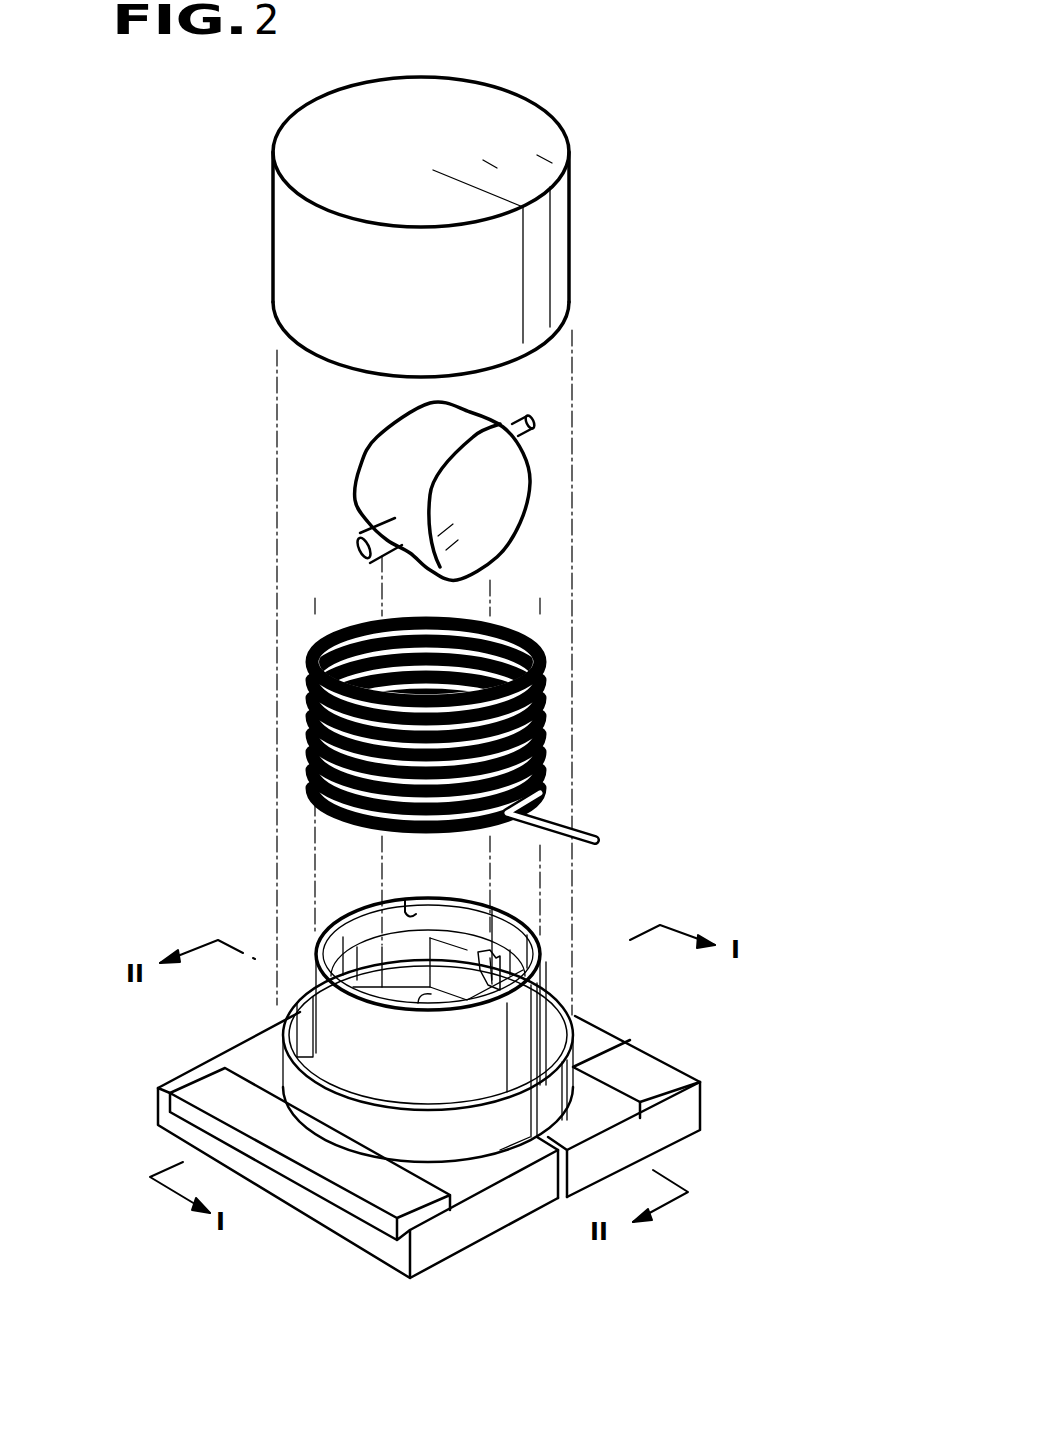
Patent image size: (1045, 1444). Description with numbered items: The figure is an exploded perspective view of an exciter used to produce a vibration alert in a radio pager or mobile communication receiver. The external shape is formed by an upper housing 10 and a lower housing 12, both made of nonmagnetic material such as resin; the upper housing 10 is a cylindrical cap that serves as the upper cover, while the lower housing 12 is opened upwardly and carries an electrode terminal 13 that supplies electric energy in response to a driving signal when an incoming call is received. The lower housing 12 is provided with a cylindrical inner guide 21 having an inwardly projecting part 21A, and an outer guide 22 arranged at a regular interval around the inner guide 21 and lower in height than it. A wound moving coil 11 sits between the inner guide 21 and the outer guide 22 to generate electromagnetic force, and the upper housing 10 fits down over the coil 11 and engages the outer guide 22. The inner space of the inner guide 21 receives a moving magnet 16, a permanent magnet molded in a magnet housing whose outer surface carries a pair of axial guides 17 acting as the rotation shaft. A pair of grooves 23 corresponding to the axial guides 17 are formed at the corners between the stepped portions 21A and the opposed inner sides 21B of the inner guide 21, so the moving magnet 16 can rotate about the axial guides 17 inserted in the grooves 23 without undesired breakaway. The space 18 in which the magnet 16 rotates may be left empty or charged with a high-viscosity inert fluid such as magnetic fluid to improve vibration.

The upper housing 10 is at (293, 243).
The moving coil 11 is at (540, 683).
The lower housing 12 is at (712, 1133).
The electrode terminal 13 is at (340, 1172).
The moving magnet 16 is at (393, 452).
The axial guides 17 is at (355, 544).
The space 18 is at (418, 1003).
The inner guide 21 is at (325, 938).
The inwardly projecting part 21A is at (404, 898).
The opposed inner sides 21B is at (505, 983).
The outer guide 22 is at (283, 1040).
The grooves 23 is at (470, 948).